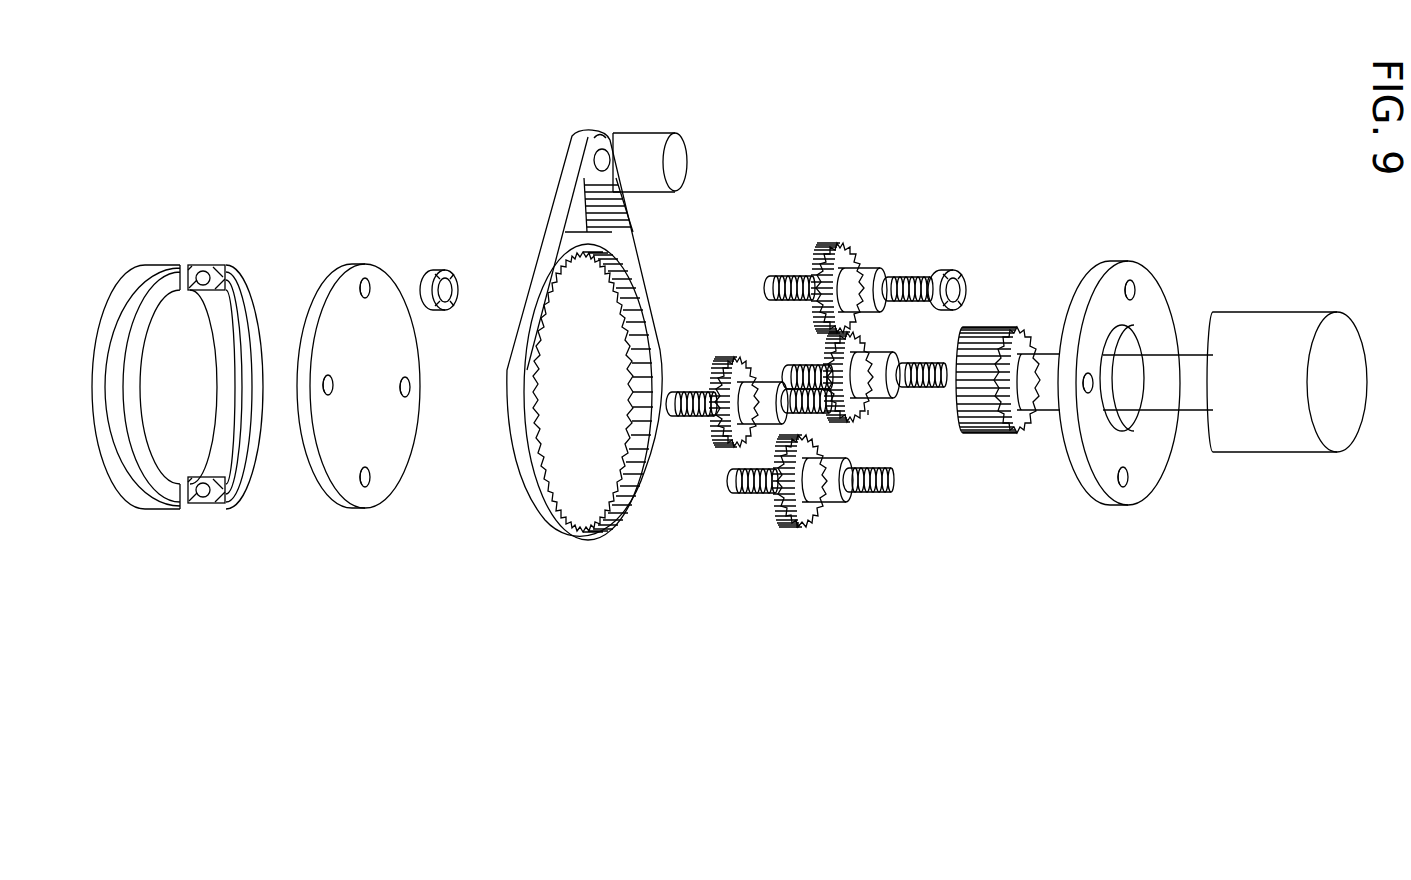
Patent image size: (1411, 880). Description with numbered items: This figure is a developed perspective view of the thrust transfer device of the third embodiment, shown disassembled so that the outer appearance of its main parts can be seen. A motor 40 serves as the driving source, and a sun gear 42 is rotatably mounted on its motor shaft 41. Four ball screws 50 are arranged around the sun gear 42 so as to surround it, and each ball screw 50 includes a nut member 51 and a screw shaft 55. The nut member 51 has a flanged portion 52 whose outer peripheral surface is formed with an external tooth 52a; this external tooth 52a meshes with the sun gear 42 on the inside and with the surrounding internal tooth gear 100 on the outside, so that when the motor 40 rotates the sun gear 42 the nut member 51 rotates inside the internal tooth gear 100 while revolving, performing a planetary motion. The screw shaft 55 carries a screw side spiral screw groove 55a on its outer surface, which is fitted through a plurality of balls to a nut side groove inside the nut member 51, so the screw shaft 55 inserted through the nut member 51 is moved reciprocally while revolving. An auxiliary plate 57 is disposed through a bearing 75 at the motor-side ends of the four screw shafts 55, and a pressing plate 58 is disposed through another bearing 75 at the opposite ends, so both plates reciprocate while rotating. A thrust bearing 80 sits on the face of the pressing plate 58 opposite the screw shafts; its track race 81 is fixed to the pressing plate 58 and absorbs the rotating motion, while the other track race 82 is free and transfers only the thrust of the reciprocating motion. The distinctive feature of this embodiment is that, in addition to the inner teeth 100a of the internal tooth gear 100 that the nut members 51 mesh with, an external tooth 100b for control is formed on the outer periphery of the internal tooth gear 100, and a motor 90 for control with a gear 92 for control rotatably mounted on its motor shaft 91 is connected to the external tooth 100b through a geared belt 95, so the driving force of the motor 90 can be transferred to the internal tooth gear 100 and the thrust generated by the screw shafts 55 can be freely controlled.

The motor 40 is at (1264, 445).
The motor shaft 41 is at (1187, 410).
The sun gear 42 is at (995, 437).
The ball screw 50 is at (814, 387).
The nut member 51 is at (870, 270).
The flanged portion 52 is at (850, 245).
The external tooth 52a is at (868, 415).
The screw shaft 55 is at (778, 278).
The screw side spiral screw groove 55a is at (920, 275).
The auxiliary plate 57 is at (1124, 265).
The pressing plate 58 is at (352, 265).
The bearing 75 is at (440, 272).
The thrust bearing 80 is at (177, 329).
The track race 81 is at (232, 290).
The track race 82 is at (242, 200).
The motor for control 90 is at (648, 133).
The motor shaft 91 is at (603, 148).
The gear for control 92 is at (598, 133).
The geared belt 95 is at (553, 197).
The internal tooth gear 100 is at (620, 385).
The ring gear teeth 100a is at (605, 512).
The external tooth for control 100b is at (600, 228).